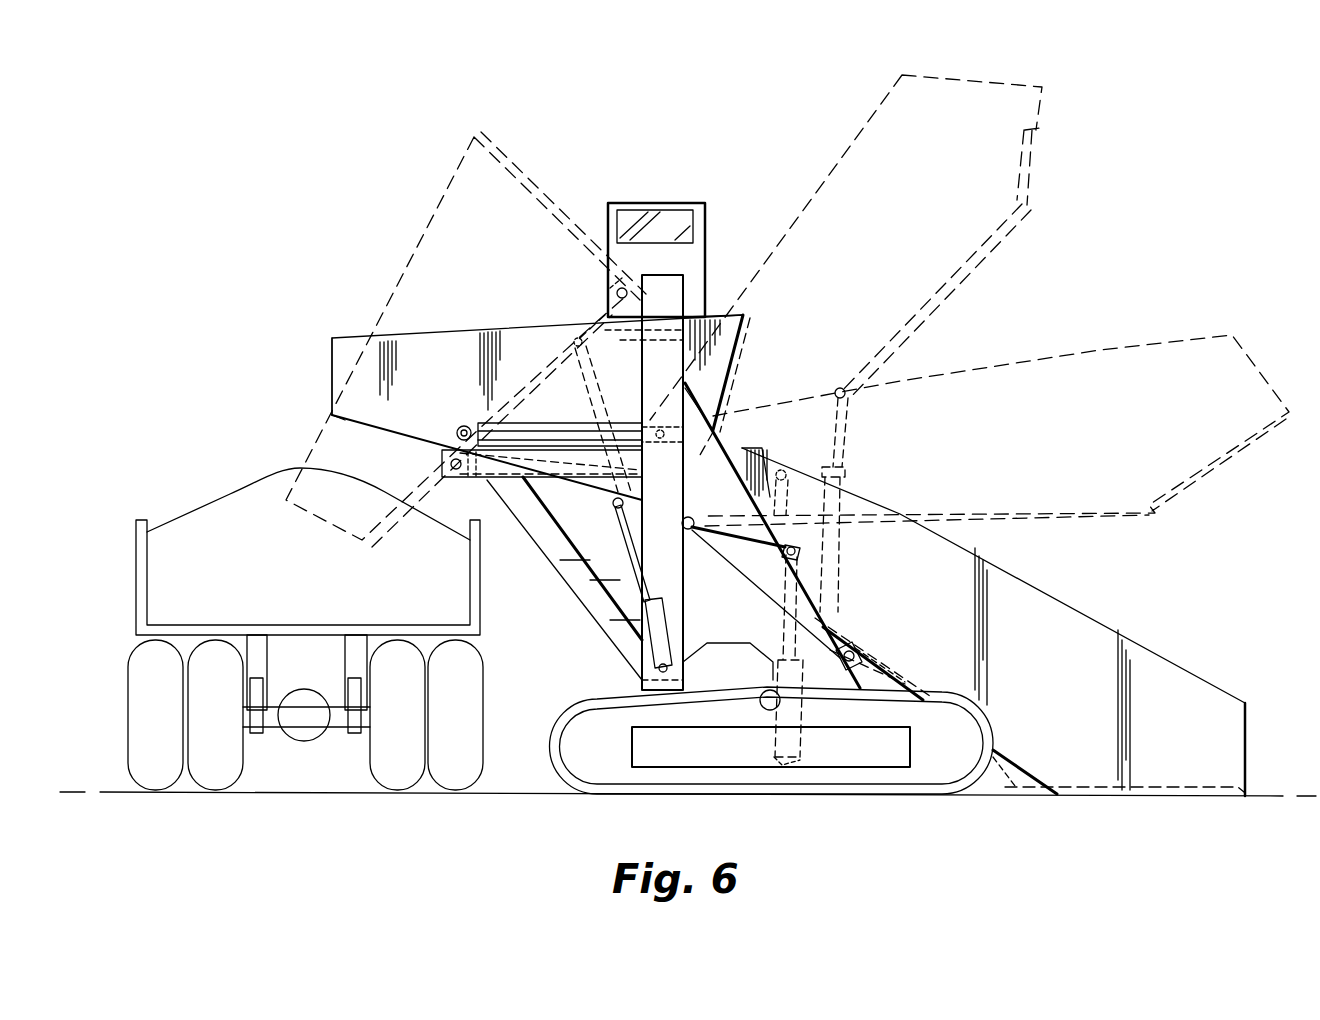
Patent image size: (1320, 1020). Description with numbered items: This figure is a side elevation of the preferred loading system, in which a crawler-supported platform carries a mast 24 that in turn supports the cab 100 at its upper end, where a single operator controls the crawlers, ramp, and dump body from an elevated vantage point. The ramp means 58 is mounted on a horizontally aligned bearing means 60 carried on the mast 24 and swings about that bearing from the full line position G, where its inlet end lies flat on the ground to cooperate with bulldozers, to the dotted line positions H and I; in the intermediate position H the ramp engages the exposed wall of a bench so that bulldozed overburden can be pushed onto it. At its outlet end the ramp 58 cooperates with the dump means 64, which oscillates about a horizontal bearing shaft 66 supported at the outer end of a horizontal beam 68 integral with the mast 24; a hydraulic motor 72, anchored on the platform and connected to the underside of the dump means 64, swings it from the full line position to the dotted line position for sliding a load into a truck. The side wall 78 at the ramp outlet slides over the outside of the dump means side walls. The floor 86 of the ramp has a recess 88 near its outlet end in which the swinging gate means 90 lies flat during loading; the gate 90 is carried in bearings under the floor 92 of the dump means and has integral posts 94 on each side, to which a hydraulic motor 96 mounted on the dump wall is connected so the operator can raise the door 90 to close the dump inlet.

The mast 24 is at (658, 390).
The ramp means 58 is at (1082, 605).
The bearing means 60 is at (690, 532).
The dump means 64 is at (449, 329).
The horizontal bearing shaft 66 is at (462, 480).
The horizontal beam 68 is at (480, 470).
The hydraulic motor 72 is at (640, 545).
The side wall 78 is at (790, 472).
The floor 86 is at (1000, 758).
The recess 88 is at (888, 655).
The swinging gate means 90 is at (522, 182).
The floor 92 is at (332, 396).
The posts 94 is at (803, 552).
The hydraulic motor 96 is at (545, 433).
The cab 100 is at (716, 216).
The full line position G is at (1235, 748).
The intermediate position H is at (1255, 362).
The raised position I is at (1048, 130).